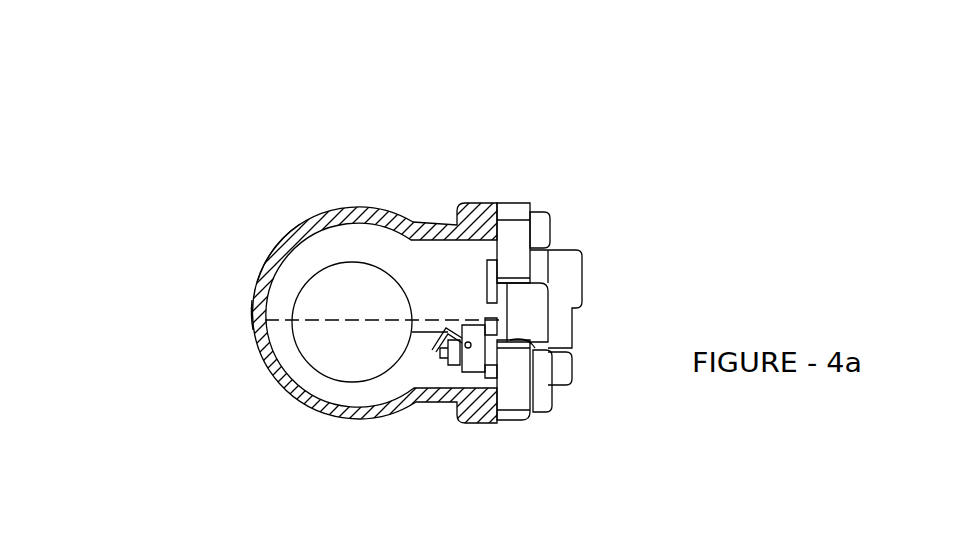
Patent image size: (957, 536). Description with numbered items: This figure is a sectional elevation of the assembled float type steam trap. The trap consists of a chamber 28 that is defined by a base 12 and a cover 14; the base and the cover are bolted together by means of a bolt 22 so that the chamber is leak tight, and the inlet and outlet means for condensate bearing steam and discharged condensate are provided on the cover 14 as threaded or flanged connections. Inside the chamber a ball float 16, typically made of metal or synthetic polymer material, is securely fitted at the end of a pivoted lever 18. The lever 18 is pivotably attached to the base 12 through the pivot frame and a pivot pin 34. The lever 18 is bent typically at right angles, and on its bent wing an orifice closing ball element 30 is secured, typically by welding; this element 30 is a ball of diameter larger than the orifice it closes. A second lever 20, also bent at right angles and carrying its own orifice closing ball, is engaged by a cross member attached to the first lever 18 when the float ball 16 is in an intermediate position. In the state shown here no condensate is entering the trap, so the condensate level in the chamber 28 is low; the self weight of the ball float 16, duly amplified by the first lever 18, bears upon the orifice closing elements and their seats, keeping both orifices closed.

The base 12 is at (518, 205).
The cover 14 is at (380, 208).
The ball float 16 is at (340, 278).
The pivoted lever 18 is at (465, 330).
The second lever 20 is at (435, 345).
The bolt 22 is at (551, 219).
The chamber 28 is at (297, 265).
The orifice closing ball element 30 is at (470, 365).
The pivot pin 34 is at (493, 377).